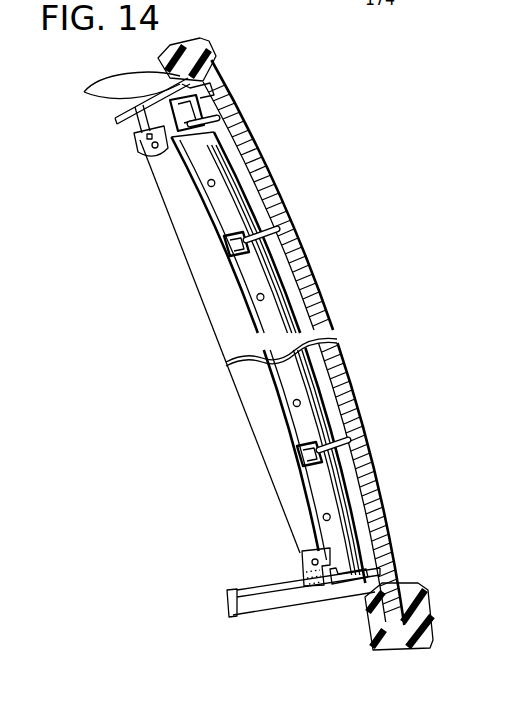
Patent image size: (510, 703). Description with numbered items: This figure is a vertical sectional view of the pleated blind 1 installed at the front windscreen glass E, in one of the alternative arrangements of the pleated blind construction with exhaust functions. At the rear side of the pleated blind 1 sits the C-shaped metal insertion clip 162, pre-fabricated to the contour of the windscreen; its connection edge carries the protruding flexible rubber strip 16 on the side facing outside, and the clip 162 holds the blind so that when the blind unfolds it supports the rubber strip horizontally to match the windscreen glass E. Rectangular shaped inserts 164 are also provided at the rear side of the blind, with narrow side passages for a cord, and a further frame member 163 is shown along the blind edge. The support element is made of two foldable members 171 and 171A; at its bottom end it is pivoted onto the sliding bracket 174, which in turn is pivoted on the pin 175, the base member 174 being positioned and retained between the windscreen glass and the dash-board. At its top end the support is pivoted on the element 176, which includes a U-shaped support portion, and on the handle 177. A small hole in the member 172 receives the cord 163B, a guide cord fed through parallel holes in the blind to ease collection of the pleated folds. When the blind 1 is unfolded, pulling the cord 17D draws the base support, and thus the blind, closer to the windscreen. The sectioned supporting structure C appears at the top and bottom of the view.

The wall/support member C is at (214, 48).
The front windscreen glass E is at (254, 167).
The upper frame member 163 is at (211, 183).
The rectangular shaped inserts 164 is at (298, 415).
The C-shaped metal insertion clip 162 is at (232, 245).
The protruding flexible rubber strip 16 is at (258, 226).
The pleated blind 1 is at (262, 318).
The foldable member 171A is at (195, 282).
The foldable member 171 is at (268, 468).
The handle 177 is at (117, 121).
The element 176 is at (138, 148).
The cord 163B is at (226, 121).
The member 172 is at (302, 555).
The cord 17D is at (372, 547).
The pin 175 is at (252, 590).
The sliding bracket 174 is at (278, 606).